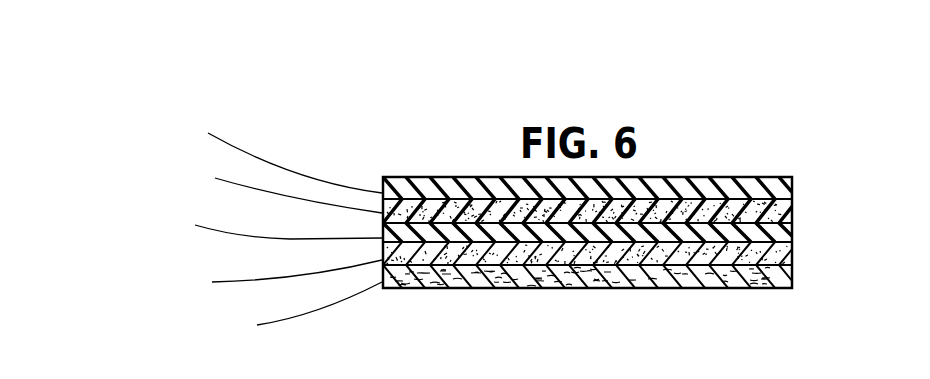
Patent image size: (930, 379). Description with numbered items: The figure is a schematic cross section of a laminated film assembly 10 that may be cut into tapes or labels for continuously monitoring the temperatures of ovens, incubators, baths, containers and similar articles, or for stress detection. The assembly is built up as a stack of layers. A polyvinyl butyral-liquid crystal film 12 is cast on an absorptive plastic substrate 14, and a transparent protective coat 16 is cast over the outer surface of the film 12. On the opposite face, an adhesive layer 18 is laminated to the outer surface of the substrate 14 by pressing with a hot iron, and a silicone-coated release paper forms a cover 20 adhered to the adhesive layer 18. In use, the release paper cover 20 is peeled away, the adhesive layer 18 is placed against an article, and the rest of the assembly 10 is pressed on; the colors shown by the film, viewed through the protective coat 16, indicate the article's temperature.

The film assembly 10 is at (697, 175).
The protective coat 16 is at (790, 190).
The polyvinyl butyral-liquid crystal film 12 is at (790, 210).
The absorptive plastic substrate 14 is at (790, 232).
The adhesive layer 18 is at (788, 255).
The release paper cover 20 is at (785, 277).